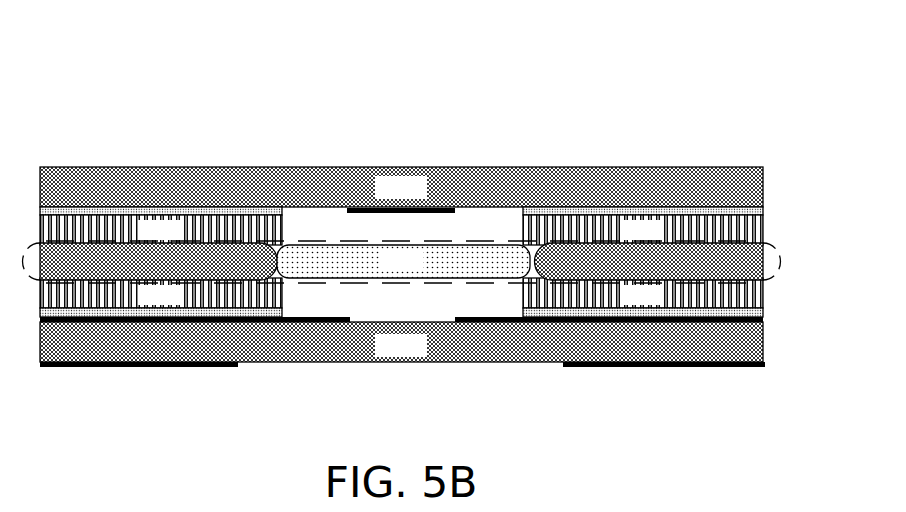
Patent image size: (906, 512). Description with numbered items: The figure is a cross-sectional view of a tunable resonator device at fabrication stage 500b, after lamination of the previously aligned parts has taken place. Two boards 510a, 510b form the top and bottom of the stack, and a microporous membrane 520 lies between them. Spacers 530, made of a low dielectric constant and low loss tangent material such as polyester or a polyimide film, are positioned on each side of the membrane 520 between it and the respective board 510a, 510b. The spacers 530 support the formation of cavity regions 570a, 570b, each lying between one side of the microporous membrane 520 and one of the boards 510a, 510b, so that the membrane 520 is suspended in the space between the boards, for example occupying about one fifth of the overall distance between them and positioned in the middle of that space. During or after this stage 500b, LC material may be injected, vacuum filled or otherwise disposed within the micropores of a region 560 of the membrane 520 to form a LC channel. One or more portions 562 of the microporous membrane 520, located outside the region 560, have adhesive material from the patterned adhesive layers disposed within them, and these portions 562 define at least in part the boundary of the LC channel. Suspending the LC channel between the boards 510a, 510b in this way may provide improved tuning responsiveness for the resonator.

The stage 500b is at (127, 99).
The board 510a is at (378, 355).
The board 510b is at (378, 197).
The microporous membrane 520 is at (382, 273).
The spacers 530 is at (141, 240).
The region 560 is at (358, 284).
The portions 562 is at (217, 246).
The cavity region 570a is at (442, 302).
The cavity region 570b is at (482, 227).